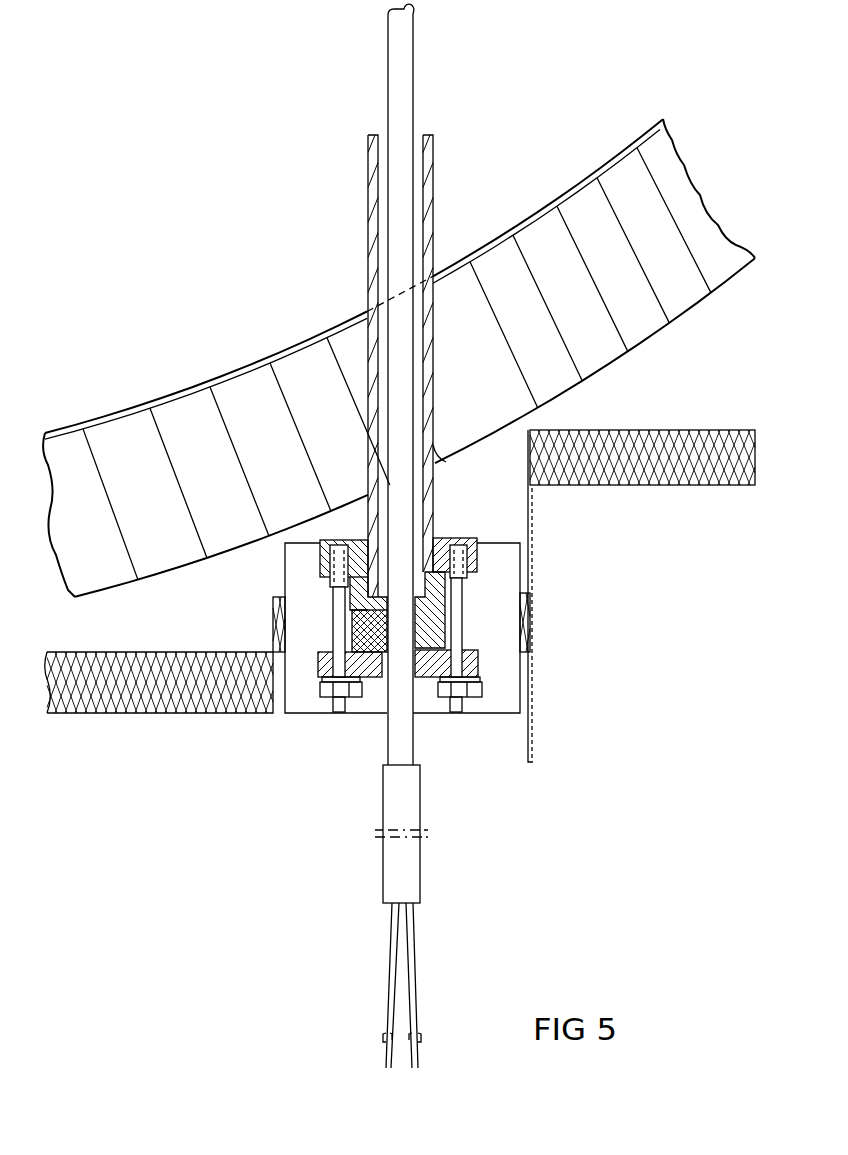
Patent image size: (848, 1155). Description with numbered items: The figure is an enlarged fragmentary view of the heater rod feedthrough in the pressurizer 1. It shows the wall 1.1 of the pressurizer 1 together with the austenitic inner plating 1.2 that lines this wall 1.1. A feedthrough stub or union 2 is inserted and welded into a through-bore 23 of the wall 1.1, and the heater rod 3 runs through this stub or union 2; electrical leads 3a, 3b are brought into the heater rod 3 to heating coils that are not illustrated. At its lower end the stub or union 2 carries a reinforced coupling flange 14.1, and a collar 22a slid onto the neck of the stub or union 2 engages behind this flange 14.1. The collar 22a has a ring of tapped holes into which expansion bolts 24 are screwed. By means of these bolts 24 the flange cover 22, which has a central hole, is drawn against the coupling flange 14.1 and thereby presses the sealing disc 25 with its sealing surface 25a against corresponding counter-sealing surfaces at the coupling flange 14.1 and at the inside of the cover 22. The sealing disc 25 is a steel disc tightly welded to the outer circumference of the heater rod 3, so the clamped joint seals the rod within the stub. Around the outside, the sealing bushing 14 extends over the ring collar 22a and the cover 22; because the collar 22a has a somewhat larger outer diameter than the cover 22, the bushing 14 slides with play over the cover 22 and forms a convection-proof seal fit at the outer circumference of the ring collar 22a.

The pressurizer 1 is at (630, 332).
The wall 1.1 is at (397, 364).
The austenitic inner plating 1.2 is at (568, 189).
The feedthrough stub or union 2 is at (434, 200).
The heater rod 3 is at (405, 77).
The electrical lead 3a is at (390, 974).
The electrical lead 3b is at (412, 975).
The sealing bushing 14 is at (507, 562).
The coupling flange 14.1 is at (360, 597).
The flange cover 22 is at (478, 667).
The collar 22a is at (478, 571).
The through-bore 23 is at (436, 452).
The expansion bolt 24 is at (461, 630).
The sealing disc 25 is at (362, 637).
The sealing surface 25a is at (349, 558).